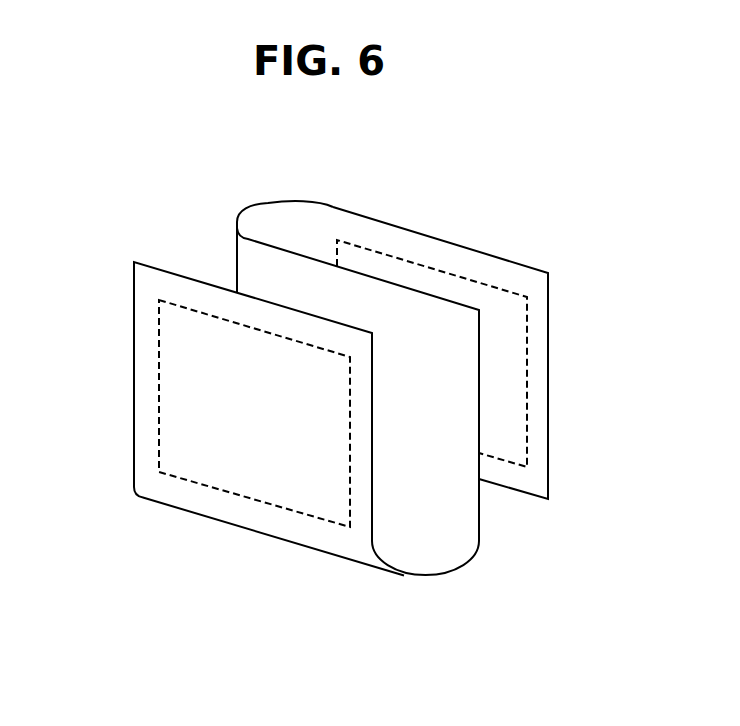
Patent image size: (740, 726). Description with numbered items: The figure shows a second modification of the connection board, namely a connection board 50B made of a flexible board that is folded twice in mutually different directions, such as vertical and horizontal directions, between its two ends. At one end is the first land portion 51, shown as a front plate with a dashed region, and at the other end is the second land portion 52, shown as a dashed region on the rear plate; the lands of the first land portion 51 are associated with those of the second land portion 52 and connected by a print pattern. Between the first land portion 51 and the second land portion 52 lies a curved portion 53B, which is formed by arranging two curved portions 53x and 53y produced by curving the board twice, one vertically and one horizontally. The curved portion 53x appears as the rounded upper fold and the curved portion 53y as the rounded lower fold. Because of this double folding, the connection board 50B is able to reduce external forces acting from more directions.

The connection board 50B is at (427, 220).
The first land portion 51 is at (187, 392).
The second land portion 52 is at (512, 376).
The curved portion 53B is at (217, 220).
The curved portion 53x is at (238, 215).
The curved portion 53y is at (440, 576).